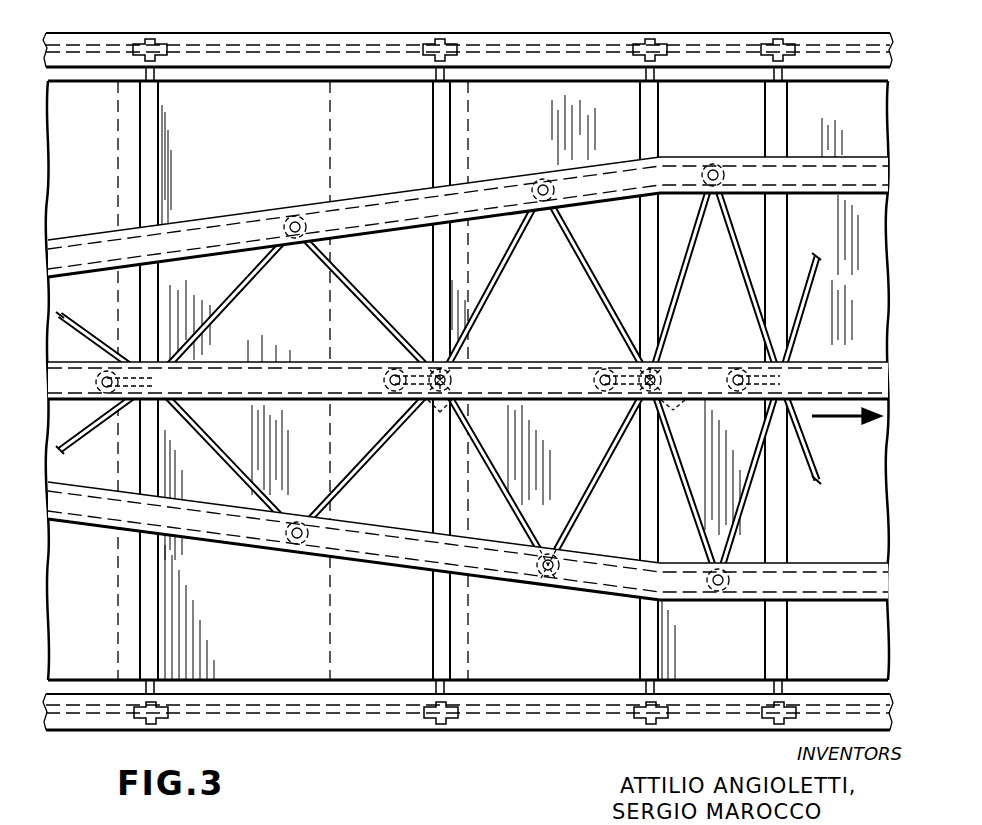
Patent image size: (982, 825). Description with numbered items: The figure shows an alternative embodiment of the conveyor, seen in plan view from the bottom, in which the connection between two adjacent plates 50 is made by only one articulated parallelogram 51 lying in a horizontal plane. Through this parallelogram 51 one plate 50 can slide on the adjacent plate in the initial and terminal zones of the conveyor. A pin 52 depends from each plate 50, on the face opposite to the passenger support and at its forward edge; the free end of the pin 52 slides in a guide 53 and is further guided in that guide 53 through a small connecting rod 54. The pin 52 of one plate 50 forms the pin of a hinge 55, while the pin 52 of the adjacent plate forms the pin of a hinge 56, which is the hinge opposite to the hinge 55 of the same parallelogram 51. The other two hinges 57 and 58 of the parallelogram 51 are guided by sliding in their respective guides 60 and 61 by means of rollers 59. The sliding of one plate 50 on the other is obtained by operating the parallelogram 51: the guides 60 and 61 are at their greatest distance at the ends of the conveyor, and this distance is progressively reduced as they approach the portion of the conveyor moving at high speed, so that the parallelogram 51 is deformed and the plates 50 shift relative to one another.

The plate 50 is at (238, 127).
The articulated parallelogram 51 is at (348, 297).
The pin 52 is at (468, 375).
The guide 53 is at (551, 361).
The small connecting rod 54 is at (420, 395).
The hinge 55 is at (678, 403).
The hinge 56 is at (437, 411).
The hinge 57 is at (536, 181).
The hinge 58 is at (587, 560).
The roller 59 is at (285, 228).
The guide 60 is at (384, 212).
The guide 61 is at (606, 597).